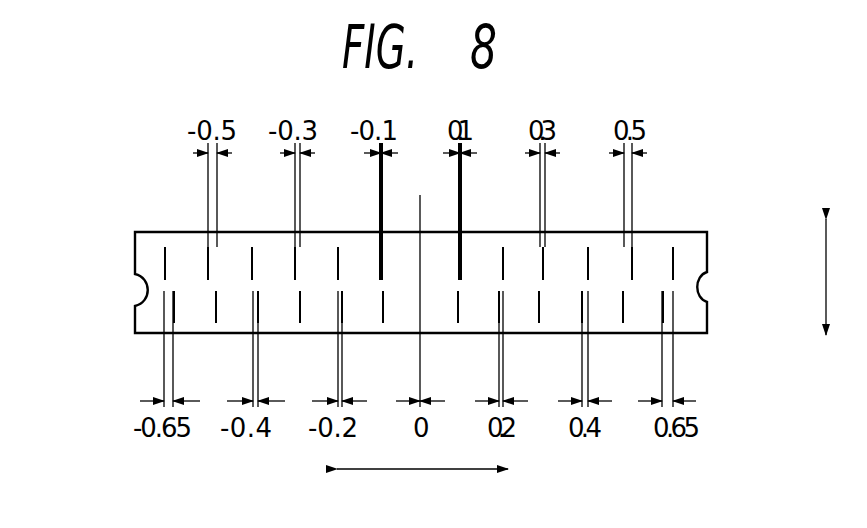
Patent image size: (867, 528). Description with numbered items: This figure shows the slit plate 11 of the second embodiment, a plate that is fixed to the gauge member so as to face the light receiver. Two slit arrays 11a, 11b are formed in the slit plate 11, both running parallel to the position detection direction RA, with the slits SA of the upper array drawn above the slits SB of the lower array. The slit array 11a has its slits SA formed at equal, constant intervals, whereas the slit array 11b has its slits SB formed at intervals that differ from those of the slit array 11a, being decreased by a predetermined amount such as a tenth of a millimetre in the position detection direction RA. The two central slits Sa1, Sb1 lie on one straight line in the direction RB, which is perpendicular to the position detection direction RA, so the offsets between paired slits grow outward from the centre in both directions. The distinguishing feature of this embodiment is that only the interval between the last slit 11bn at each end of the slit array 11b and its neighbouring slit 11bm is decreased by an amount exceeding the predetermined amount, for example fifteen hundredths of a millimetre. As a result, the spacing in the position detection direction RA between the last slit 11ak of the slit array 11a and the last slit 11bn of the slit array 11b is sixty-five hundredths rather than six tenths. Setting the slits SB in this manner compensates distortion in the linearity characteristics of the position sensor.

The slit plate 11 is at (707, 232).
The slit array 11a is at (683, 263).
The slit array 11b is at (682, 313).
The last slit of slit array 11a 11ak is at (673, 260).
The neighboring slit 11bm is at (623, 318).
The last slit of slit array 11b 11bn is at (663, 318).
The slits of slit array 11a SA is at (163, 260).
The slits of slit array 11b SB is at (172, 312).
The central slit Sa1 is at (420, 260).
The central slit Sb1 is at (420, 313).
The position detection direction RA is at (422, 486).
The direction perpendicular to position detection direction RB is at (827, 300).